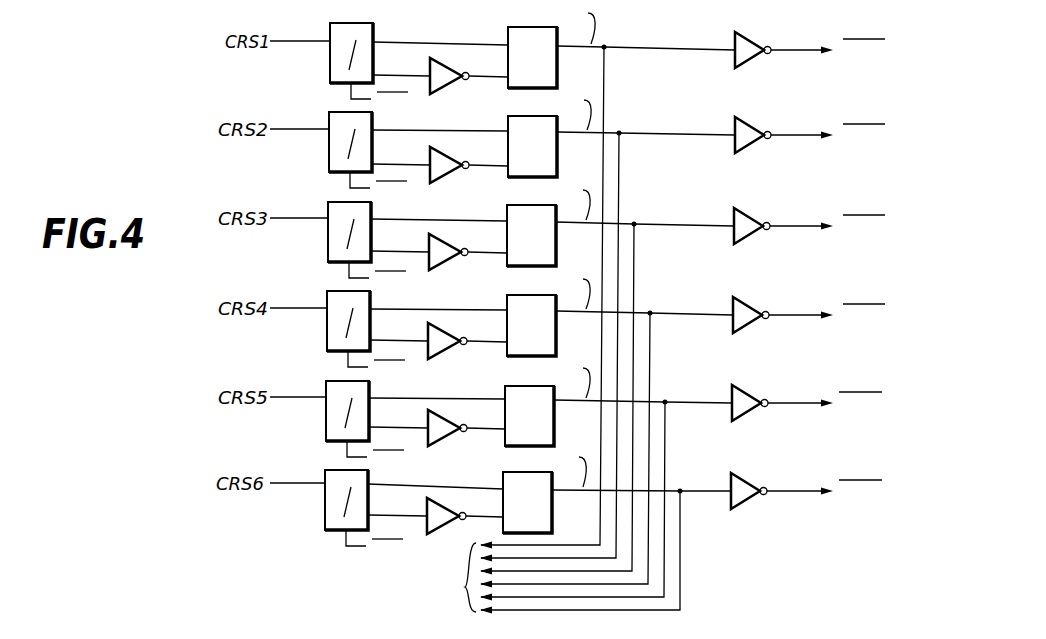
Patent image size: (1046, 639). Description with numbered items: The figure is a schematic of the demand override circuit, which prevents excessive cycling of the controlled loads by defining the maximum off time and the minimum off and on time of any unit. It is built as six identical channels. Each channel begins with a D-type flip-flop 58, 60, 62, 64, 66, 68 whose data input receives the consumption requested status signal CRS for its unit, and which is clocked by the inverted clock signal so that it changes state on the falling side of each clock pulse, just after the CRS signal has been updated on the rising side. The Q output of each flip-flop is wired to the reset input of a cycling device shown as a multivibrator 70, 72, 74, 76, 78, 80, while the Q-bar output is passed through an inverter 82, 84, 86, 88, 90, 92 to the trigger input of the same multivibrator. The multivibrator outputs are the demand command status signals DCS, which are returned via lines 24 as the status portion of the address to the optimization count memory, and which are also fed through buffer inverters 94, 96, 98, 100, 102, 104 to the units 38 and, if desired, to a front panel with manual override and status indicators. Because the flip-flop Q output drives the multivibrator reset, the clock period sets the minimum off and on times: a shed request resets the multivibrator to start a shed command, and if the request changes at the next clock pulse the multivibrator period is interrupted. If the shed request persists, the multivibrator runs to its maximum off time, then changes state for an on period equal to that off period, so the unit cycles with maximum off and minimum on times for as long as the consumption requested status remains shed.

The D-type flip-flop 58 is at (334, 28).
The D-type flip-flop 60 is at (333, 117).
The D-type flip-flop 62 is at (332, 207).
The D-type flip-flop 64 is at (331, 296).
The D-type flip-flop 66 is at (330, 386).
The D-type flip-flop 68 is at (329, 475).
The multivibrator 70 is at (514, 31).
The multivibrator 72 is at (513, 120).
The multivibrator 74 is at (512, 209).
The multivibrator 76 is at (512, 299).
The multivibrator 78 is at (512, 390).
The multivibrator 80 is at (508, 478).
The inverter 82 is at (435, 89).
The inverter 84 is at (435, 178).
The inverter 86 is at (434, 265).
The inverter 88 is at (433, 354).
The inverter 90 is at (443, 445).
The inverter 92 is at (444, 510).
The buffer inverter 94 is at (750, 43).
The buffer inverter 96 is at (750, 128).
The buffer inverter 98 is at (749, 219).
The buffer inverter 100 is at (748, 308).
The buffer inverter 102 is at (748, 396).
The buffer inverter 104 is at (748, 484).
The lines 24 is at (651, 619).
The units 38 is at (864, 284).